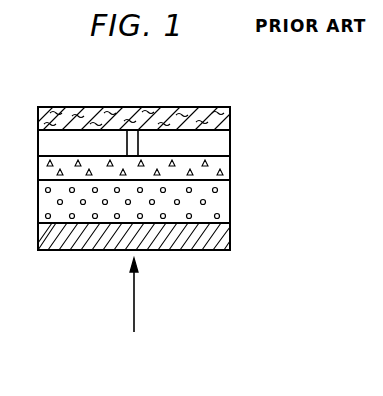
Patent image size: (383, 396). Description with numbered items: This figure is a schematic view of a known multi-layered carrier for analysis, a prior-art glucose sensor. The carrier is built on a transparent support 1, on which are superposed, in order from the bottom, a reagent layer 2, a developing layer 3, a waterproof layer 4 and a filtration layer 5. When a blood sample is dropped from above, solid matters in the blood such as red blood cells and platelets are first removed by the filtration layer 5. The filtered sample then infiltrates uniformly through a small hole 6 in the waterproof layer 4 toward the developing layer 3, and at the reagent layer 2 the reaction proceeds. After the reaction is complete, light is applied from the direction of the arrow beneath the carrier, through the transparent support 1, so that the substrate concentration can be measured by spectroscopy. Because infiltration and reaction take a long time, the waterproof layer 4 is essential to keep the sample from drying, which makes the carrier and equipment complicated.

The transparent support 1 is at (229, 230).
The reagent layer 2 is at (222, 196).
The developing layer 3 is at (224, 165).
The waterproof layer 4 is at (231, 139).
The filtration layer 5 is at (231, 112).
The small hole 6 is at (131, 140).